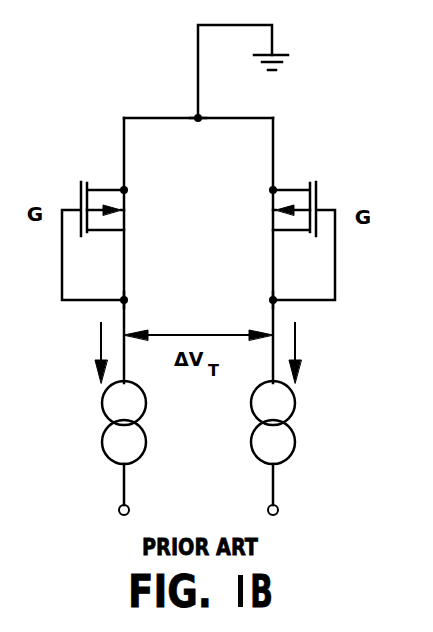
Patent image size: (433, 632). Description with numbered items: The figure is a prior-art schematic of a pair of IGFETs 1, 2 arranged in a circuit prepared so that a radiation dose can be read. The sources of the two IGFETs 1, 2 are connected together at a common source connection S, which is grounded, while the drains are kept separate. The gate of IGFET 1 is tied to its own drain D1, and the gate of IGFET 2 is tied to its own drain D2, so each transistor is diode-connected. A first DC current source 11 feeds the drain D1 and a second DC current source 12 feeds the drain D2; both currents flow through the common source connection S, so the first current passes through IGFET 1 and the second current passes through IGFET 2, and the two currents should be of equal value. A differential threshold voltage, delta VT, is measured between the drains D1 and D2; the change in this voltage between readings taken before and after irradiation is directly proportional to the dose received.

The IGFET 1 is at (108, 185).
The IGFET 2 is at (292, 190).
The common source connection S is at (198, 136).
The drain D1 is at (142, 303).
The drain D2 is at (254, 303).
The DC current source 11 is at (81, 353).
The DC current source 12 is at (312, 353).